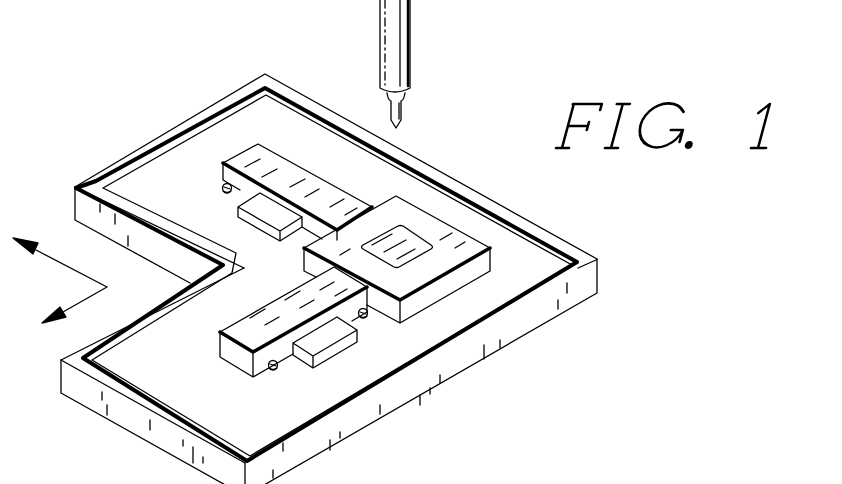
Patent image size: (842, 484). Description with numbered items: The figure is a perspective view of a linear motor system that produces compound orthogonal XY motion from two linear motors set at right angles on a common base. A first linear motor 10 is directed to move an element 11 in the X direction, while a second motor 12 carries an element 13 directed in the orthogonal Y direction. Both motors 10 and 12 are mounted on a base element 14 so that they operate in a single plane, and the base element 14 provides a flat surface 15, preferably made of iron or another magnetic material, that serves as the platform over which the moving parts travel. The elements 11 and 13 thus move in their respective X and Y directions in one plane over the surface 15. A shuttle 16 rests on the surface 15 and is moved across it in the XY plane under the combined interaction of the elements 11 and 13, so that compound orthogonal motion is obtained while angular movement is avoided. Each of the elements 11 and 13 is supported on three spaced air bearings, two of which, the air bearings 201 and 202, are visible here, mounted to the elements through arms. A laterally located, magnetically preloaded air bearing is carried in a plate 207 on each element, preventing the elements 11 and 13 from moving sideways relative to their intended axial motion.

The first linear motor 10 is at (274, 325).
The element 11 is at (326, 272).
The second motor 12 is at (297, 183).
The element 13 is at (352, 212).
The base element 14 is at (465, 170).
The flat surface 15 is at (157, 374).
The shuttle 16 is at (486, 263).
The air bearing 201 is at (221, 189).
The air bearing 202 is at (366, 320).
The plate 207 is at (243, 213).